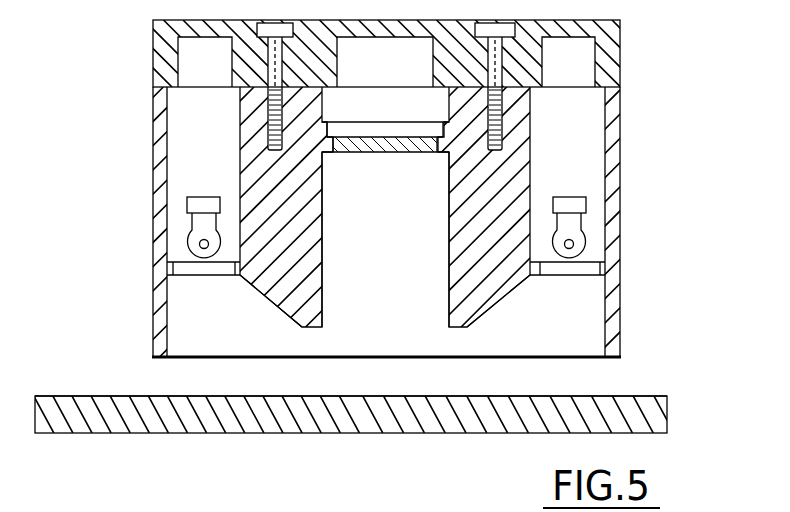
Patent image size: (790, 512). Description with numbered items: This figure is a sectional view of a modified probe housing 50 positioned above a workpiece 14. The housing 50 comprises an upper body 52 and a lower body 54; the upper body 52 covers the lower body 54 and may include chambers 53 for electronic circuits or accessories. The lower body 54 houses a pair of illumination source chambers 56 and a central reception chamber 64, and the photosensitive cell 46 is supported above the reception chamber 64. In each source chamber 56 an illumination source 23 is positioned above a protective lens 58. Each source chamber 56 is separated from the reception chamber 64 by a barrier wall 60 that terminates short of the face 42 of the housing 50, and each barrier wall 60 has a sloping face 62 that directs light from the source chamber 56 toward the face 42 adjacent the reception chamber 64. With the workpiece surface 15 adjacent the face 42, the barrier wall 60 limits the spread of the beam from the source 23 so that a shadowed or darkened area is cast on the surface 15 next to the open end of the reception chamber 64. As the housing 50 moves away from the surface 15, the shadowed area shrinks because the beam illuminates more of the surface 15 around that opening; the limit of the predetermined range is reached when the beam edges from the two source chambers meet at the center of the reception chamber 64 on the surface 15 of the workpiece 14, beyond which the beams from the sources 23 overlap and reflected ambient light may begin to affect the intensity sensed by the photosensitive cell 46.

The workpiece 14 is at (362, 420).
The workpiece surface 15 is at (47, 393).
The illumination source 23 is at (573, 246).
The face 42 is at (590, 362).
The photosensitive cell 46 is at (412, 130).
The housing 50 is at (395, 194).
The upper body 52 is at (618, 68).
The chambers 53 is at (585, 45).
The lower body 54 is at (618, 202).
The illumination source chamber 56 is at (180, 133).
The protective lens 58 is at (212, 268).
The barrier wall 60 is at (462, 195).
The sloping face 62 is at (280, 310).
The reception chamber 64 is at (448, 288).